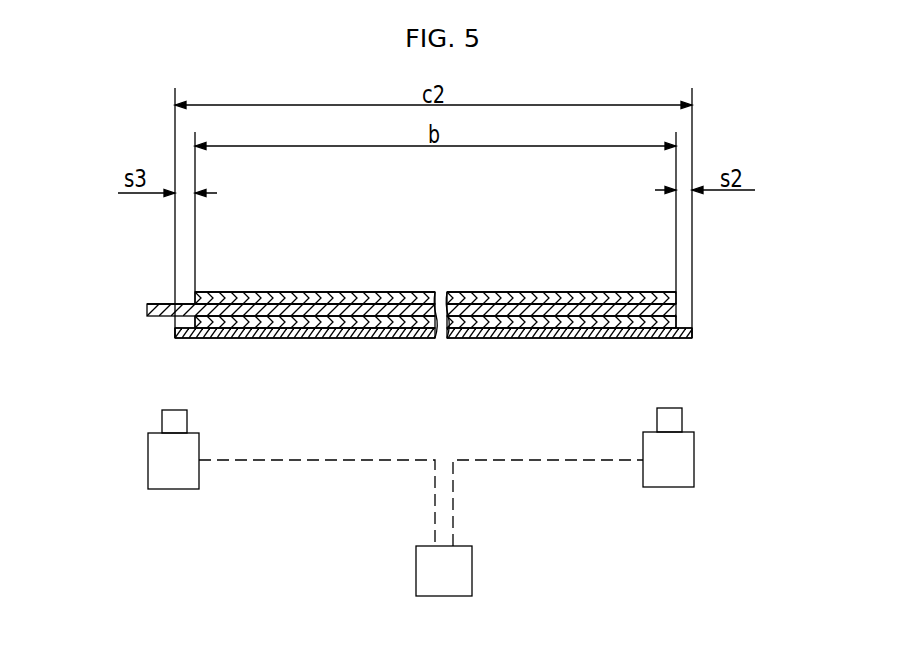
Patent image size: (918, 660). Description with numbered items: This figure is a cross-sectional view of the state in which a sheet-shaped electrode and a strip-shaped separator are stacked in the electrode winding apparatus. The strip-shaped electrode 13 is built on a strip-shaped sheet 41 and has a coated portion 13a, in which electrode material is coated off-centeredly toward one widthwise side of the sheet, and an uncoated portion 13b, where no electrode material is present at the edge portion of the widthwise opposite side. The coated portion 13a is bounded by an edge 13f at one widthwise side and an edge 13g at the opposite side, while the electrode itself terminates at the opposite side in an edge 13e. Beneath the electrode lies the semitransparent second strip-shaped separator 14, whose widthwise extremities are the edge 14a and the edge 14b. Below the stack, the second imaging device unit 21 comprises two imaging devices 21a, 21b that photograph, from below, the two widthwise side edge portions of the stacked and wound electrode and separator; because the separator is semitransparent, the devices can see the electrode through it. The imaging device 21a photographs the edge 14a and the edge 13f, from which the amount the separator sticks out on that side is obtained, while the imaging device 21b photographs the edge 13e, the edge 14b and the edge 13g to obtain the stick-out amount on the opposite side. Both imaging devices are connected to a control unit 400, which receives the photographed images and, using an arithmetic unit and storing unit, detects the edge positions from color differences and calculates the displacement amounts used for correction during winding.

The strip-shaped electrode 13 is at (506, 263).
The coated portion 13a is at (333, 292).
The uncoated portion 13b is at (152, 304).
The edge at the opposite side of the strip-shaped negative electrode 13e is at (148, 310).
The edge of the coated portion 13f is at (676, 297).
The edge at the opposite side of the coated portion 13g is at (196, 297).
The second strip-shaped separator 14 is at (390, 339).
The edge of the second strip-shaped separator 14a is at (692, 330).
The edge at the opposite side of the second strip-shaped separator 14b is at (176, 334).
The strip-shaped sheet 41 is at (567, 292).
The second imaging device unit 21 is at (177, 525).
The imaging device 21a is at (694, 460).
The imaging device 21b is at (148, 465).
The control unit 400 is at (416, 572).